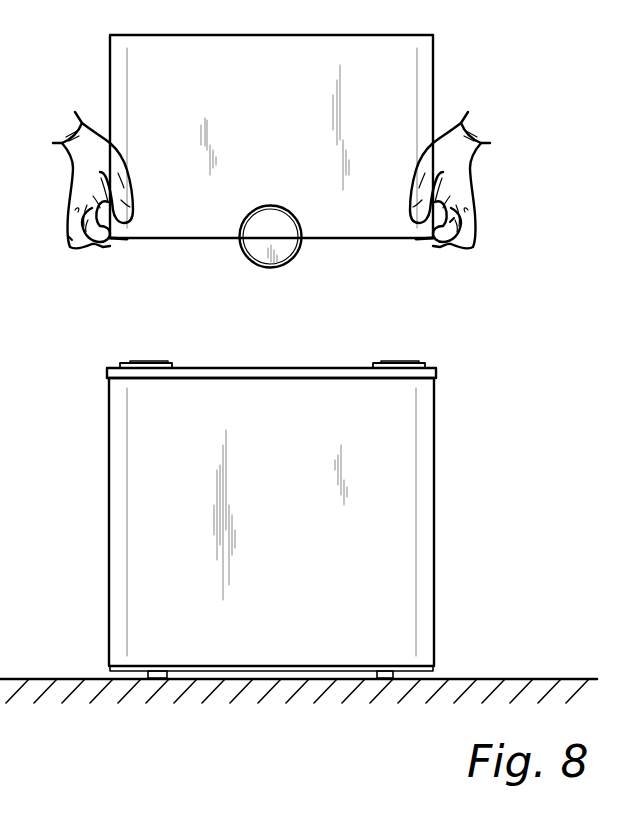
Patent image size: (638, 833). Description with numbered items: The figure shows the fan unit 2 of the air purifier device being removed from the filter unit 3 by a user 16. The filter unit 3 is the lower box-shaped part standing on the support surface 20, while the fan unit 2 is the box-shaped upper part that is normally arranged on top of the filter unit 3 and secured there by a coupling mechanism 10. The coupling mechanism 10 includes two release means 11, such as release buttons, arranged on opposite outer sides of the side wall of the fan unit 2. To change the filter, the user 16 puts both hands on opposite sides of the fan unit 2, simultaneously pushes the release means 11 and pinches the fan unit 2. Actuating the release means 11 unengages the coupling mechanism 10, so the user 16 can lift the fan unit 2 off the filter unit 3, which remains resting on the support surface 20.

The fan unit 2 is at (97, 83).
The filter unit 3 is at (456, 471).
The coupling mechanism 10 is at (77, 248).
The release means 11 is at (98, 246).
The user 16 is at (478, 168).
The support surface 20 is at (517, 679).